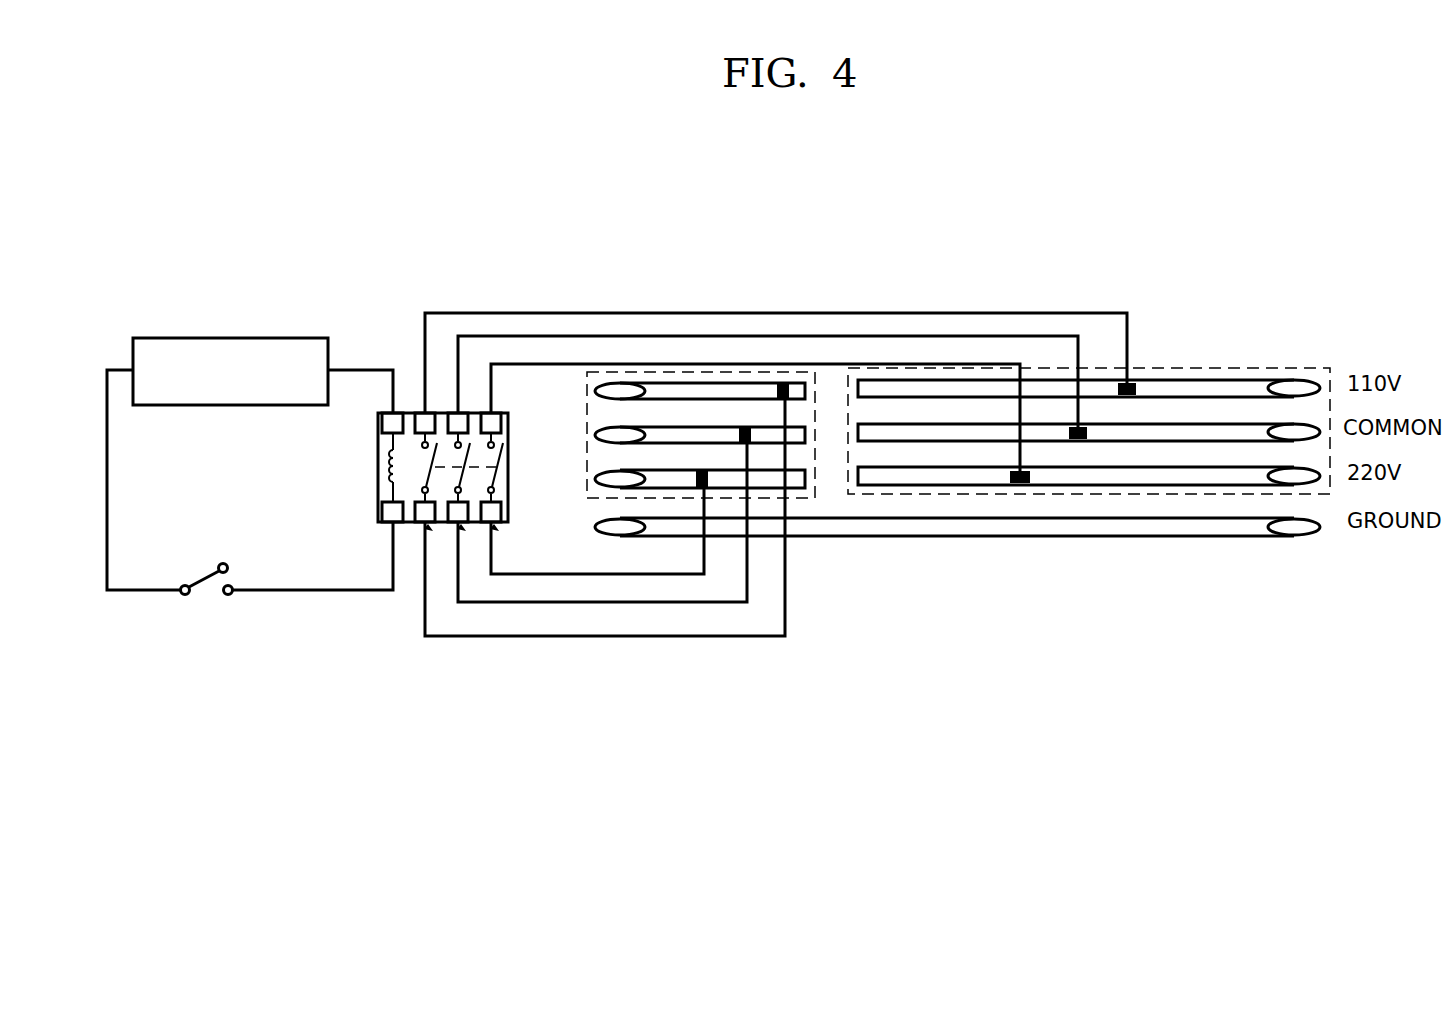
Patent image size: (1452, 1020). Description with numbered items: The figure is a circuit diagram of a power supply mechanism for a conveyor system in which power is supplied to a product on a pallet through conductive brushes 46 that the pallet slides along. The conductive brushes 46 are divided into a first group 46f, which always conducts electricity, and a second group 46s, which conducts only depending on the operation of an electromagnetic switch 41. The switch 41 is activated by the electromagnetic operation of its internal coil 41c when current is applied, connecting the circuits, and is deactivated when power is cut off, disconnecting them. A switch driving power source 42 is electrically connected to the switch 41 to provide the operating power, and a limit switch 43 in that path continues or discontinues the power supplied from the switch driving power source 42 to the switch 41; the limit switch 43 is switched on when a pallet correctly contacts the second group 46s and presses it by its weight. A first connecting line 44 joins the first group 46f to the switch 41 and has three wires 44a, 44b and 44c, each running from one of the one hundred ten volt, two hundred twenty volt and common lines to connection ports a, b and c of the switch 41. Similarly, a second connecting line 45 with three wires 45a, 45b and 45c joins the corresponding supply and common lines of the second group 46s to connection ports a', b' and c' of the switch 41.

The switch 41 is at (385, 471).
The internal coil 41c is at (389, 460).
The switch driving power source 42 is at (236, 338).
The limit switch 43 is at (202, 573).
The first connecting line 44 is at (776, 331).
The wire 44a is at (632, 311).
The wire 44b is at (673, 334).
The wire 44c is at (623, 240).
The second connecting line 45 is at (605, 572).
The wire 45a is at (693, 637).
The wire 45b is at (638, 603).
The wire 45c is at (597, 588).
The conductive brushes 46 is at (1089, 392).
The first group of conductive brushes 46f is at (1175, 367).
The second group of conductive brushes 46s is at (586, 444).